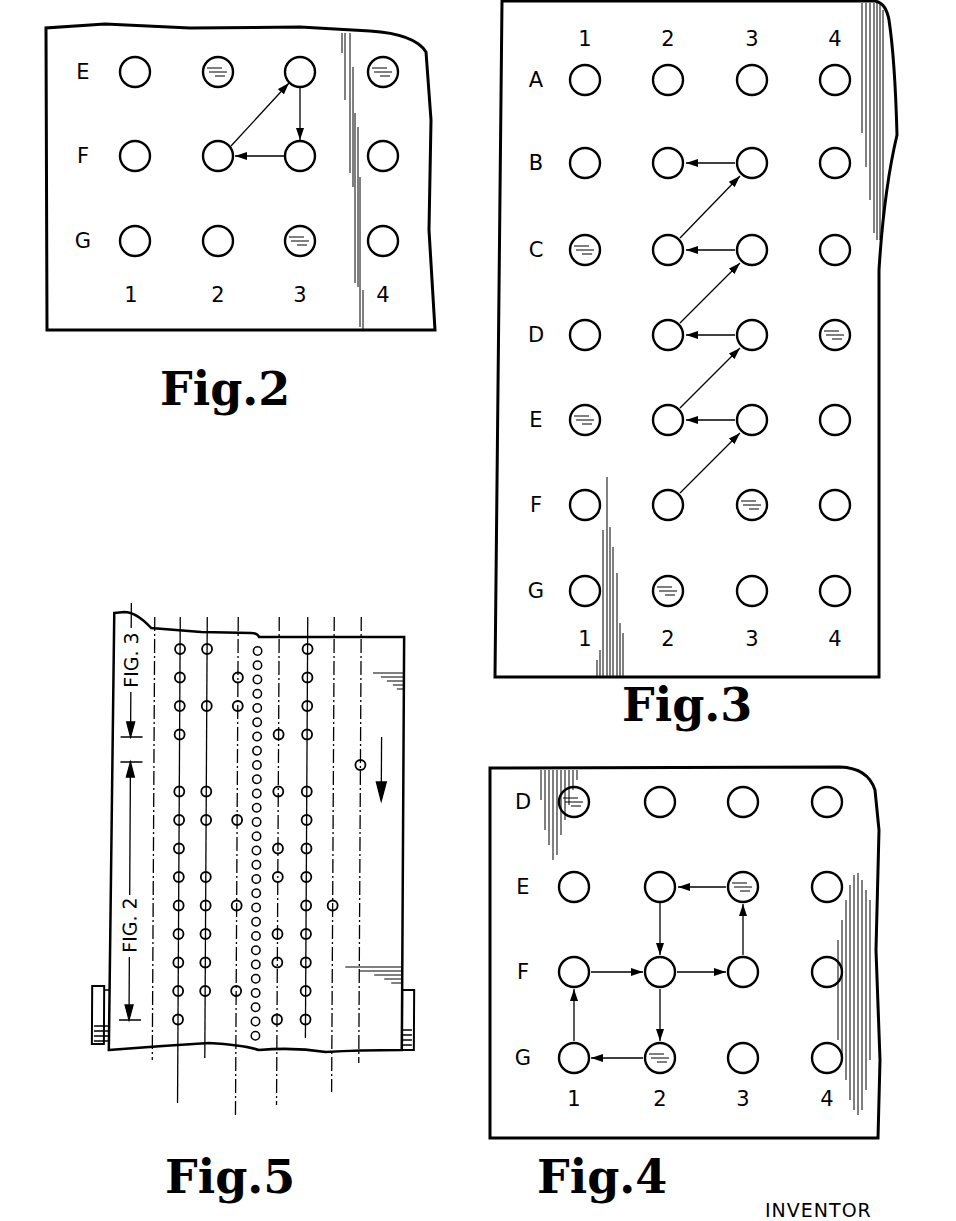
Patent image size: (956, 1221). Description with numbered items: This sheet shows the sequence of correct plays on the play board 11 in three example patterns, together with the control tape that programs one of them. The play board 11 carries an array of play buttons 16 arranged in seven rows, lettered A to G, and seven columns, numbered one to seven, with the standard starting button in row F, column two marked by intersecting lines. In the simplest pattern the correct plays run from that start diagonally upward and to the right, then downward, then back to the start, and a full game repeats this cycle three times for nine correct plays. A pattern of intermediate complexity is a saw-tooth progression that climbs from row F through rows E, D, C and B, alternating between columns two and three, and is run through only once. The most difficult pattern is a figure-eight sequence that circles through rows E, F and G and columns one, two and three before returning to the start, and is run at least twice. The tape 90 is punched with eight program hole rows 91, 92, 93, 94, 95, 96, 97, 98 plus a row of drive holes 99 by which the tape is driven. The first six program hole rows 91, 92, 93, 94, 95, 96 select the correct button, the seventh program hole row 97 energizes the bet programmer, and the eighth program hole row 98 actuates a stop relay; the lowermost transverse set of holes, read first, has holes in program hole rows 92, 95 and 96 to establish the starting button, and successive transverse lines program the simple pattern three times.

In FIG. 2, the play board 11 is at (247, 44).
In FIG. 3, the play board 11 is at (518, 31).
In FIG. 4, the play board 11 is at (632, 782).
In FIG. 2, the play buttons 16 is at (207, 143).
In FIG. 3, the play buttons 16 is at (587, 162).
In FIG. 4, the play buttons 16 is at (737, 795).
In FIG. 5, the tape 90 is at (123, 827).
In FIG. 5, the program hole row 91 is at (148, 1052).
In FIG. 5, the program hole row 92 is at (177, 1088).
In FIG. 5, the program hole row 93 is at (204, 1052).
In FIG. 5, the program hole row 94 is at (235, 1090).
In FIG. 5, the program hole row 95 is at (276, 1097).
In FIG. 5, the program hole row 96 is at (306, 1038).
In FIG. 5, the program hole row 97 is at (333, 1072).
In FIG. 5, the program hole row 98 is at (360, 1057).
In FIG. 5, the drive holes 99 is at (255, 1040).